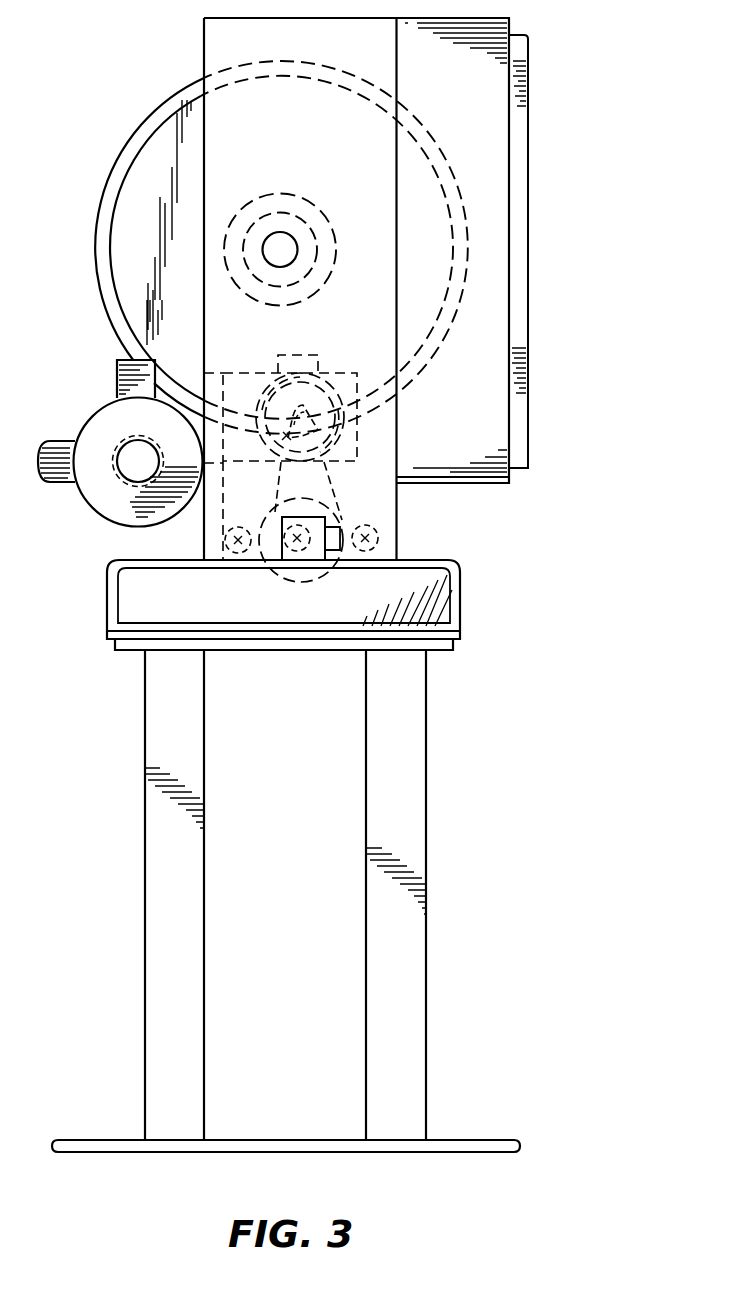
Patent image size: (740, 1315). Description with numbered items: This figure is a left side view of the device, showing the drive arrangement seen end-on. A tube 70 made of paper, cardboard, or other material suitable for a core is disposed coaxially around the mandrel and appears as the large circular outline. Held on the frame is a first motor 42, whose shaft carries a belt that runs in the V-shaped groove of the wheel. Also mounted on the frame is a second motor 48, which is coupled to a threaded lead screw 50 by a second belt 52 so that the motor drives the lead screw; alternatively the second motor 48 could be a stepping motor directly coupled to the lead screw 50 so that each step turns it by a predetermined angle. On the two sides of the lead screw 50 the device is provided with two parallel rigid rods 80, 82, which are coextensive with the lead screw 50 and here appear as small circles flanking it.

The tube 70 is at (445, 300).
The first motor 42 is at (98, 478).
The second motor 48 is at (358, 450).
The second belt 52 is at (318, 576).
The threaded lead screw 50 is at (287, 560).
The rigid rod 82 is at (222, 566).
The rigid rod 80 is at (380, 537).